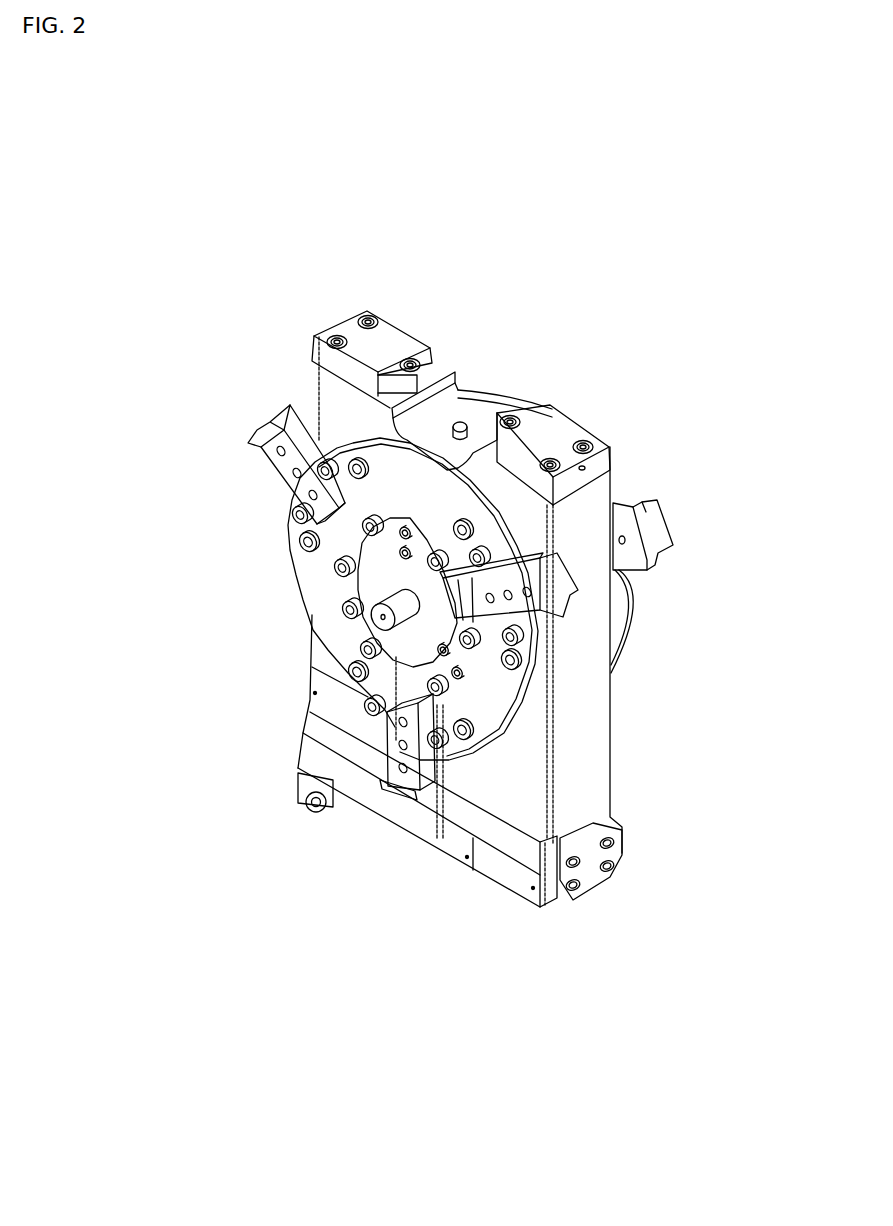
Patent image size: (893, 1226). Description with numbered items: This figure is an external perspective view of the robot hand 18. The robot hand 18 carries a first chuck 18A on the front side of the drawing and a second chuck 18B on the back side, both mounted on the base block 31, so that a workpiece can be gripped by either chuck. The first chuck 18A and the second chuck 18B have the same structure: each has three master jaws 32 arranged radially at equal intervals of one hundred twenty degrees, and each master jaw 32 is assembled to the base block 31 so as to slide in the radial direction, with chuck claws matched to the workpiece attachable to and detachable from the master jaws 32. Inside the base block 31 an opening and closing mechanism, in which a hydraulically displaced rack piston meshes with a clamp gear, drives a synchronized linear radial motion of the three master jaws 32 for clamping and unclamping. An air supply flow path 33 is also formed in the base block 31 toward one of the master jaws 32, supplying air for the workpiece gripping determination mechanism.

The robot hand 18 is at (518, 283).
The first chuck 18A is at (310, 617).
The second chuck 18B is at (677, 488).
The base block 31 is at (590, 755).
The master jaw 32 is at (278, 468).
The air supply flow path 33 is at (450, 777).